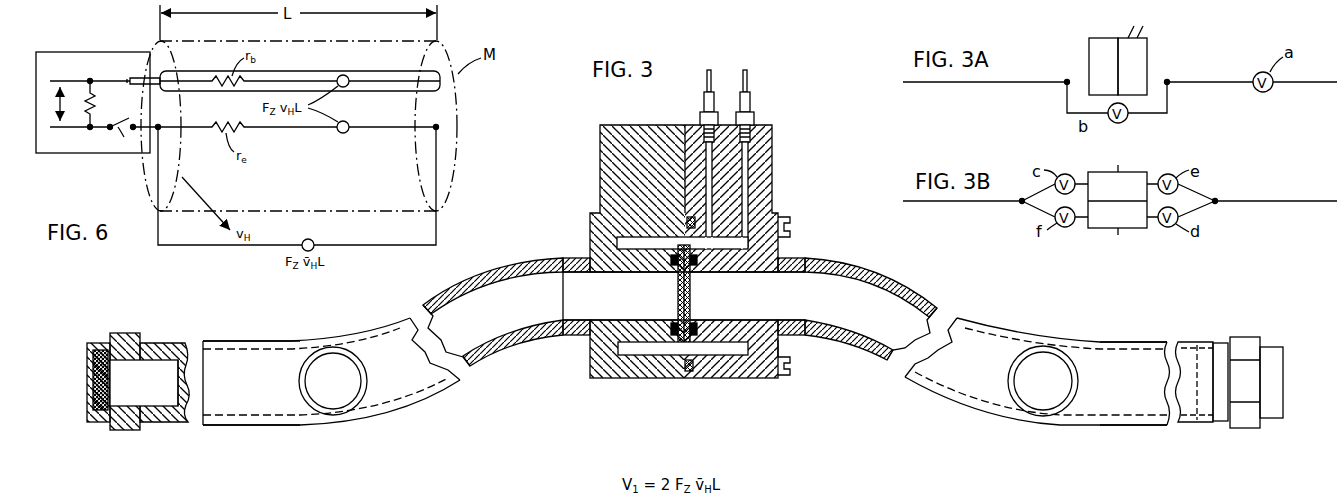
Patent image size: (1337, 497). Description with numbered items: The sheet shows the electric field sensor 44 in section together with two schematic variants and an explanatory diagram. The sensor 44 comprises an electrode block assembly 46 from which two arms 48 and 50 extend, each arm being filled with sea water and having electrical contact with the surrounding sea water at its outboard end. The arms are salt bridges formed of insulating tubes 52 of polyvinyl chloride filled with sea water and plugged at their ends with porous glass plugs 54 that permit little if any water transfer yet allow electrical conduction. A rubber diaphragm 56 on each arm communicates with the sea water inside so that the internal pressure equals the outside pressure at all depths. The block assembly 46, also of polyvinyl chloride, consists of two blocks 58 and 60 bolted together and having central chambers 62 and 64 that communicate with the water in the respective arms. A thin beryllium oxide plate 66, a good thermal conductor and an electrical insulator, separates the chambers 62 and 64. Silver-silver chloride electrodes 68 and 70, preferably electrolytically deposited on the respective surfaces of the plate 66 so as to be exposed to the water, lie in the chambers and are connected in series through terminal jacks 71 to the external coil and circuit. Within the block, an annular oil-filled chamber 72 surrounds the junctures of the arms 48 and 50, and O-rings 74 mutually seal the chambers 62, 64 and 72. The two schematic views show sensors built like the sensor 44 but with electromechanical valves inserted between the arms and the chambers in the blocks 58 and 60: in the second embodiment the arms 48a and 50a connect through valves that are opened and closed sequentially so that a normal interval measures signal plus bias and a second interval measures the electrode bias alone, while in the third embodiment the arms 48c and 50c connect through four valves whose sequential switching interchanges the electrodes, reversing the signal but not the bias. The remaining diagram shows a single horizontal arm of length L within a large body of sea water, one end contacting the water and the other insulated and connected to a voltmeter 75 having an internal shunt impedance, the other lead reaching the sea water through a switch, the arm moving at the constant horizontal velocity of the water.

In FIG. 3, the electric field sensor 44 is at (846, 382).
In FIG. 3, the electrode block assembly 46 is at (583, 234).
In FIG. 3, the arm 48 is at (380, 328).
In FIG. 3A, the arm 48a is at (928, 83).
In FIG. 3B, the arm 48c is at (978, 201).
In FIG. 3, the arm 50 is at (988, 322).
In FIG. 3A, the arm 50a is at (1322, 83).
In FIG. 3B, the arm 50c is at (1325, 201).
In FIG. 3, the insulating tube 52 is at (248, 426).
In FIG. 3, the porous glass plug 54 is at (92, 384).
In FIG. 3, the rubber diaphragm 56 is at (352, 386).
In FIG. 3, the block 58 is at (590, 365).
In FIG. 3A, the block 58 is at (1089, 60).
In FIG. 3B, the block 58 is at (1130, 172).
In FIG. 3, the block 60 is at (779, 346).
In FIG. 3A, the block 60 is at (1147, 60).
In FIG. 3, the central chamber 62 is at (620, 296).
In FIG. 3, the central chamber 64 is at (747, 296).
In FIG. 3, the beryllium oxide plate 66 is at (691, 293).
In FIG. 3, the silver-silver chloride electrode 68 is at (678, 308).
In FIG. 3, the silver-silver chloride electrode 70 is at (690, 306).
In FIG. 3, the terminal jack 71 is at (745, 70).
In FIG. 3A, the terminal jack 71 is at (1143, 26).
In FIG. 3B, the terminal jack 71 is at (1118, 168).
In FIG. 3, the oil-filled chamber 72 is at (722, 352).
In FIG. 3, the O-ring 74 is at (687, 223).
In FIG. 6, the voltmeter 75 is at (72, 52).